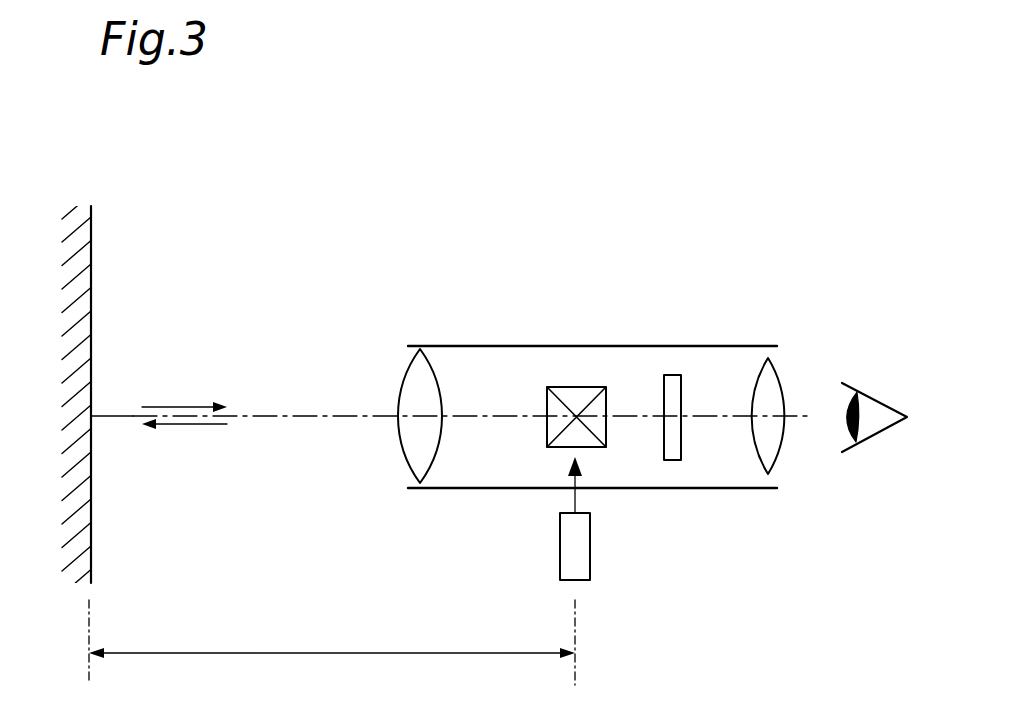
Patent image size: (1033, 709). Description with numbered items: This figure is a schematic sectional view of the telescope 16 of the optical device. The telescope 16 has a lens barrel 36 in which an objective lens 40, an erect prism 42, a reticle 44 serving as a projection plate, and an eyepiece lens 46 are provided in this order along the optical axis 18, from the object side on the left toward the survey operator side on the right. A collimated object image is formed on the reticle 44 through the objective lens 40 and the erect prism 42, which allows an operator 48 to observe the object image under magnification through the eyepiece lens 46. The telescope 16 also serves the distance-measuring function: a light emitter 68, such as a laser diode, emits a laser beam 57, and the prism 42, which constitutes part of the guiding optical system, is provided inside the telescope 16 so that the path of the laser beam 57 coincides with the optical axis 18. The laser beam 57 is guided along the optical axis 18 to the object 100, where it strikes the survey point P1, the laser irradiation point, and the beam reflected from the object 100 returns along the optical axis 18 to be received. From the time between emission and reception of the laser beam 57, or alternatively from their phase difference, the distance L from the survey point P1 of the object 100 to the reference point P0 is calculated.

The object 100 is at (91, 301).
The laser beam 57 is at (247, 413).
The optical axis 18 is at (300, 420).
The telescope 16 is at (449, 335).
The lens barrel 36 is at (658, 346).
The objective lens 40 is at (407, 383).
The erect prism 42 is at (547, 437).
The reticle 44 is at (670, 460).
The eyepiece lens 46 is at (778, 378).
The operator 48 is at (877, 397).
The light emitter 68 is at (575, 580).
The reference point P0 is at (578, 418).
The survey point P1 is at (91, 416).
The distance L is at (332, 642).